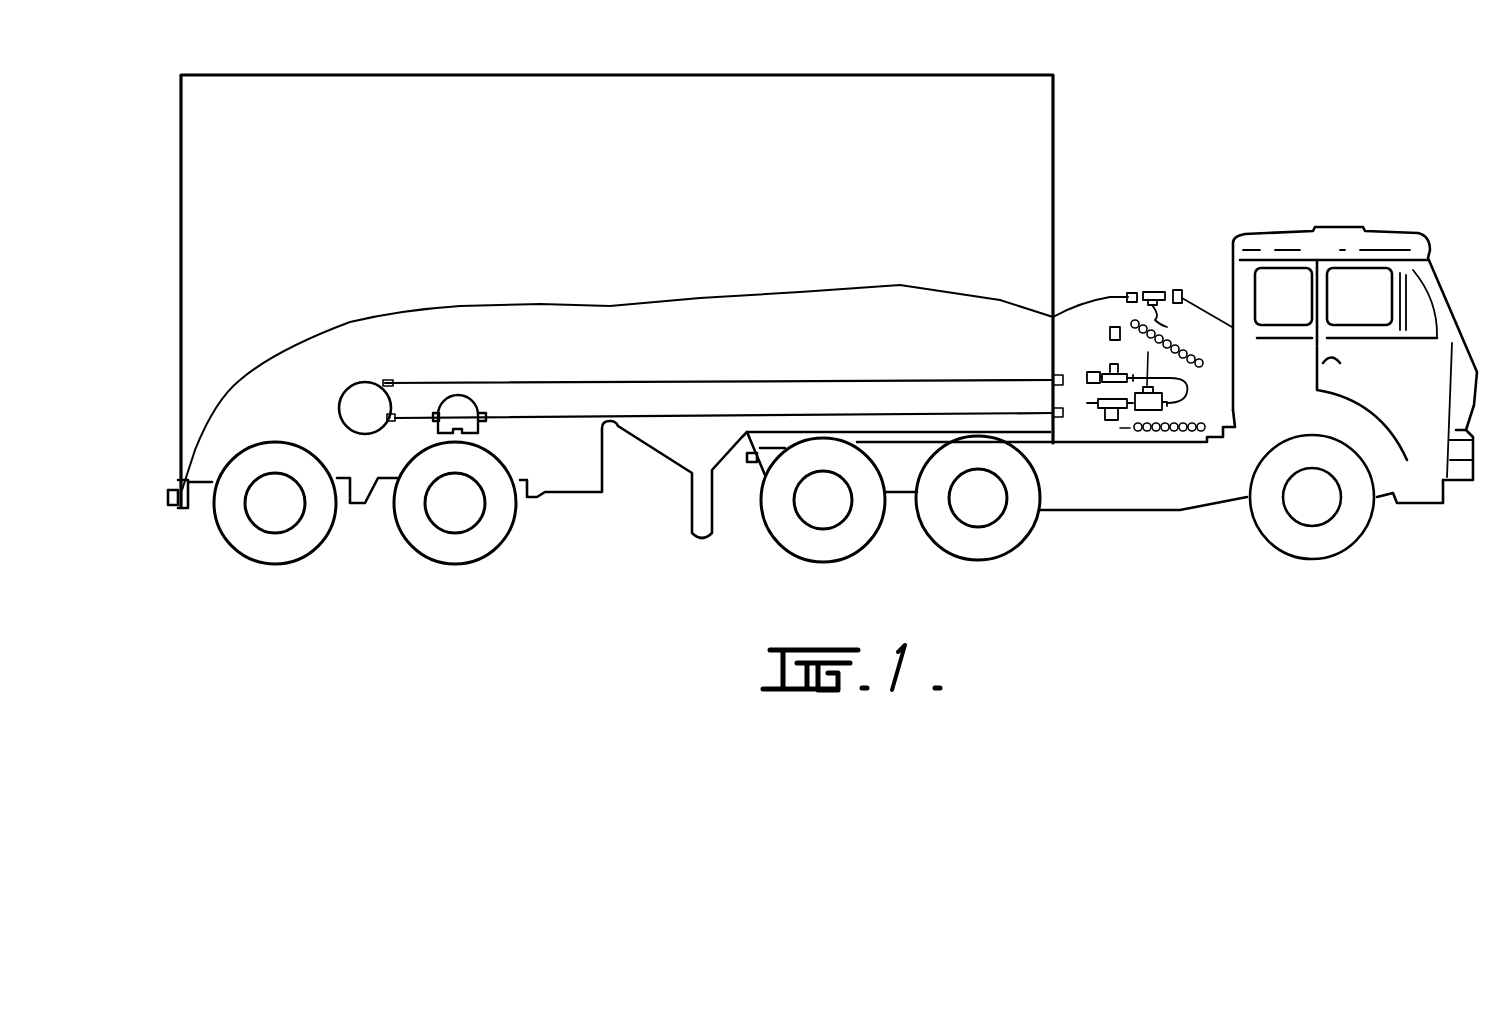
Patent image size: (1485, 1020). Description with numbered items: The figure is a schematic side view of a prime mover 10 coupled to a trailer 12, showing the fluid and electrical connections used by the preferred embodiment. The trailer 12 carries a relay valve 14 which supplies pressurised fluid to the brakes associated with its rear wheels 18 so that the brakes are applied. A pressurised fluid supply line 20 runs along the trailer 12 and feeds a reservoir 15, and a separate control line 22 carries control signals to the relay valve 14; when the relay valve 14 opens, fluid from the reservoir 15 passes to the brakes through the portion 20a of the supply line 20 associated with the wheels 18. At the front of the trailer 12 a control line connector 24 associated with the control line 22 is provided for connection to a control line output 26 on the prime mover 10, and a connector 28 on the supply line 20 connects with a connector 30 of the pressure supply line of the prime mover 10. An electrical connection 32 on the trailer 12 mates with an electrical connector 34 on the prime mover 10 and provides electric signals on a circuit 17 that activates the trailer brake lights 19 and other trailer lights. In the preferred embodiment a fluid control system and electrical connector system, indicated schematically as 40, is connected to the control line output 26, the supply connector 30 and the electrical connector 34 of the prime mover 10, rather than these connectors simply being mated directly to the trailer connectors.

The prime mover 10 is at (1417, 503).
The trailer 12 is at (625, 448).
The relay valve 14 is at (463, 395).
The reservoir 15 is at (360, 387).
The circuit 17 is at (260, 357).
The rear wheels 18 is at (430, 540).
The trailer brake lights 19 is at (160, 505).
The pressurised fluid supply line 20 is at (535, 383).
The portion of the supply line 20a is at (397, 414).
The control line 22 is at (656, 402).
The control line connector 24 is at (1065, 413).
The control line output 26 is at (1113, 432).
The connector 28 is at (1073, 378).
The connector 30 is at (1110, 332).
The electrical connection 32 is at (1135, 290).
The electrical connector 34 is at (1177, 290).
The fluid control system and electrical connector system 40 is at (1073, 303).